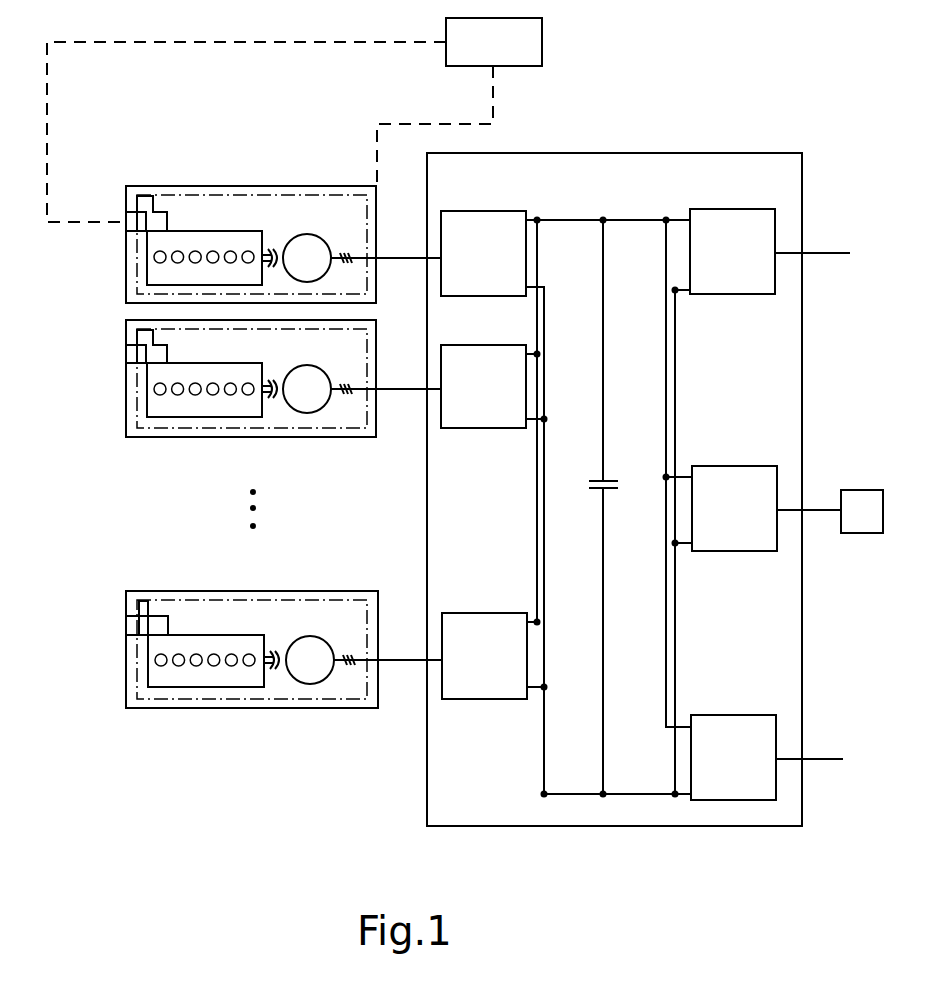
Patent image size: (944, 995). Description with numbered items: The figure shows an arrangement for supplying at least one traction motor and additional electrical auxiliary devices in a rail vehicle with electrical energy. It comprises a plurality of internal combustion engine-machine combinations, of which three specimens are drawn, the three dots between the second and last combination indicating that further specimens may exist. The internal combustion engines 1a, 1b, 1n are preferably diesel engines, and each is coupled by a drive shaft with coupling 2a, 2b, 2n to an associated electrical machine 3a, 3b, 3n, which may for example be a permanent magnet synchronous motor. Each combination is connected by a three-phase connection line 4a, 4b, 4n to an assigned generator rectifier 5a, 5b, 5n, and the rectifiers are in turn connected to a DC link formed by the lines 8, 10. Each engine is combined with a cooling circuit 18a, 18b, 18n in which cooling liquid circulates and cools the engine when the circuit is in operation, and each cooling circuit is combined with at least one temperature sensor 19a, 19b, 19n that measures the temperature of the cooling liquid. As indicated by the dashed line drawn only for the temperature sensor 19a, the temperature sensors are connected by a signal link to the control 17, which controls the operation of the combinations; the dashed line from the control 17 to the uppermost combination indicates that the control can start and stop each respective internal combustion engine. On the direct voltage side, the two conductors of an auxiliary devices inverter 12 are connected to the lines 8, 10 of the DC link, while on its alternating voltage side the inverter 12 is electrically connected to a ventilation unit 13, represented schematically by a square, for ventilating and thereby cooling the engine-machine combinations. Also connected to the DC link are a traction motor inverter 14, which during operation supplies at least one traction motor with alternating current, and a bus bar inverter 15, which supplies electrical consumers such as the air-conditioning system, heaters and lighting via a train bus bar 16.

The internal combustion engine 1a is at (147, 266).
The internal combustion engine 1b is at (146, 393).
The internal combustion engine 1n is at (148, 670).
The drive shaft with coupling 2a is at (273, 250).
The drive shaft with coupling 2b is at (277, 397).
The drive shaft with coupling 2n is at (277, 670).
The electrical machine 3a is at (315, 235).
The electrical machine 3b is at (313, 415).
The electrical machine 3n is at (310, 684).
The three-phase connection line 4a is at (392, 252).
The three-phase connection line 4b is at (392, 388).
The three-phase connection line 4n is at (396, 655).
The generator rectifier 5a is at (473, 211).
The generator rectifier 5b is at (463, 345).
The generator rectifier 5n is at (470, 613).
The line of the DC link 8 is at (573, 797).
The line of the DC link 10 is at (572, 217).
The auxiliary devices inverter 12 is at (720, 466).
The ventilation unit 13 is at (850, 490).
The traction motor inverter 14 is at (708, 210).
The bus bar inverter 15 is at (712, 715).
The train bus bar 16 is at (820, 758).
The control 17 is at (508, 57).
The cooling circuit 18a is at (158, 213).
The cooling circuit 18b is at (160, 345).
The cooling circuit 18n is at (155, 616).
The temperature sensor 19a is at (126, 220).
The temperature sensor 19b is at (127, 355).
The temperature sensor 19n is at (128, 624).